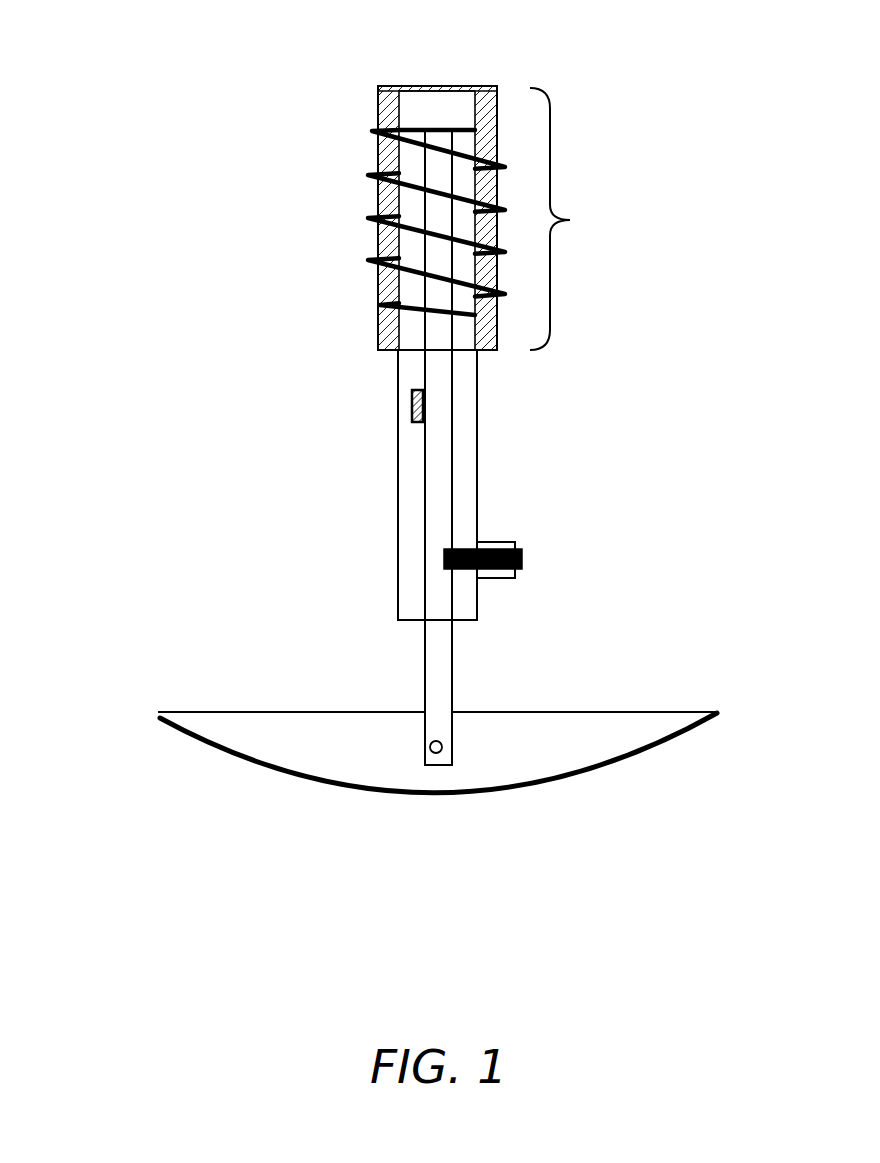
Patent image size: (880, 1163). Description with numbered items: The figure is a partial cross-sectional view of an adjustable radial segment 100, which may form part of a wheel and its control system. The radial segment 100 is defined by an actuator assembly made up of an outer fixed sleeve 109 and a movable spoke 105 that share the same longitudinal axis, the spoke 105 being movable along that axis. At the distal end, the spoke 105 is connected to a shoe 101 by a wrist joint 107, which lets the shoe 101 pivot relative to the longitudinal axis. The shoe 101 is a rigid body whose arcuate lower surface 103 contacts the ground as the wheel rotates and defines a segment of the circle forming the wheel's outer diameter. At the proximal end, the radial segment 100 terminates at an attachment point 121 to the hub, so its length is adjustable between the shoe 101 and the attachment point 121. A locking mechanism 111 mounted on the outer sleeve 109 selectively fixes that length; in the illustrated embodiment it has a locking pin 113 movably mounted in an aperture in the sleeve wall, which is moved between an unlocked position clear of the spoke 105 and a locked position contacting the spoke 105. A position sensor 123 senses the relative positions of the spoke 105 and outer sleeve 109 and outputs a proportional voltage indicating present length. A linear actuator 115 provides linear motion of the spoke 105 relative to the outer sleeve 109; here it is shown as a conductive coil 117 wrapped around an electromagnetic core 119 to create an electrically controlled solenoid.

The adjustable radial segment 100 is at (92, 149).
The shoe 101 is at (645, 715).
The arcuate lower surface 103 is at (378, 790).
The spoke 105 is at (452, 669).
The wrist joint 107 is at (430, 748).
The outer fixed sleeve 109 is at (477, 440).
The locking mechanism 111 is at (495, 542).
The locking pin 113 is at (522, 562).
The linear actuator 115 is at (570, 219).
The conductive coil 117 is at (372, 219).
The electromagnetic core 119 is at (386, 333).
The attachment point 121 is at (455, 86).
The position sensor 123 is at (412, 413).